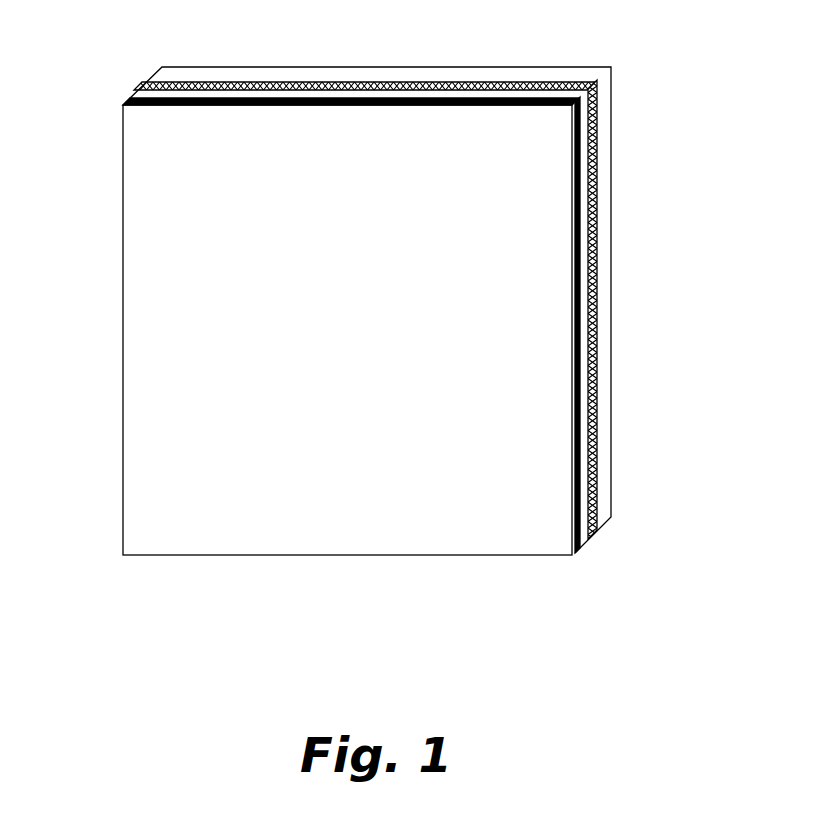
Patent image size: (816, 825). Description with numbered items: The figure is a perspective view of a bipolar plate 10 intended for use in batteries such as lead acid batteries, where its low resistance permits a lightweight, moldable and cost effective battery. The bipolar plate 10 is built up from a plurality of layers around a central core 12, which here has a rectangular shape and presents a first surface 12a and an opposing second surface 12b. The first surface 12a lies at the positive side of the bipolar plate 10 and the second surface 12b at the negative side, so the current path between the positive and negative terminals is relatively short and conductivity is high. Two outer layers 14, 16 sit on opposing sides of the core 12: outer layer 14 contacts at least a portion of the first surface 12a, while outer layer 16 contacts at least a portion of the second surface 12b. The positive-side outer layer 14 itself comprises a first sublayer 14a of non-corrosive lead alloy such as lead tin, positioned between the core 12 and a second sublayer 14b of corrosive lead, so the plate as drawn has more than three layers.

The bipolar plate 10 is at (683, 189).
The core 12 is at (565, 351).
The first surface 12a is at (583, 433).
The second surface 12b is at (597, 367).
The outer layer 14 is at (324, 135).
The first sublayer 14a is at (146, 91).
The second sublayer 14b is at (162, 99).
The outer layer 16 is at (605, 100).